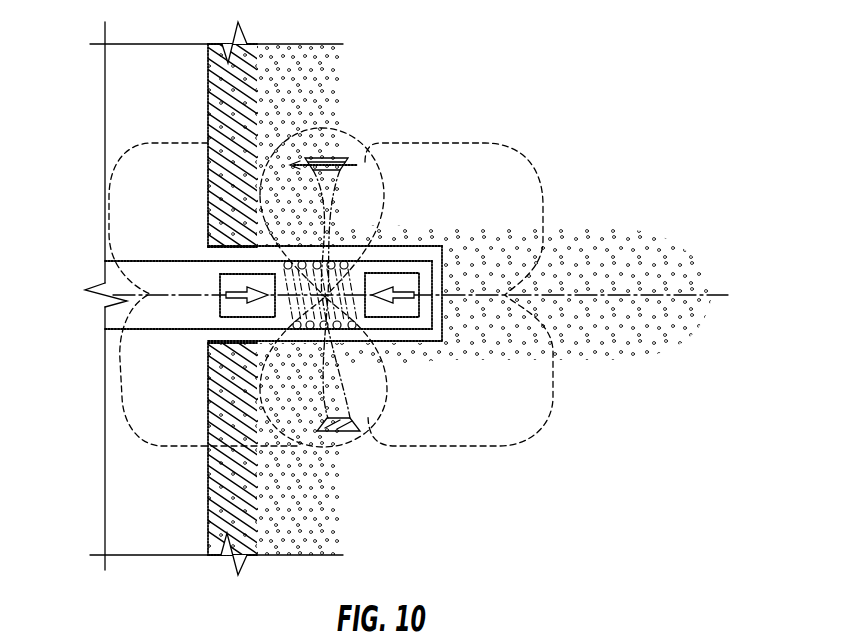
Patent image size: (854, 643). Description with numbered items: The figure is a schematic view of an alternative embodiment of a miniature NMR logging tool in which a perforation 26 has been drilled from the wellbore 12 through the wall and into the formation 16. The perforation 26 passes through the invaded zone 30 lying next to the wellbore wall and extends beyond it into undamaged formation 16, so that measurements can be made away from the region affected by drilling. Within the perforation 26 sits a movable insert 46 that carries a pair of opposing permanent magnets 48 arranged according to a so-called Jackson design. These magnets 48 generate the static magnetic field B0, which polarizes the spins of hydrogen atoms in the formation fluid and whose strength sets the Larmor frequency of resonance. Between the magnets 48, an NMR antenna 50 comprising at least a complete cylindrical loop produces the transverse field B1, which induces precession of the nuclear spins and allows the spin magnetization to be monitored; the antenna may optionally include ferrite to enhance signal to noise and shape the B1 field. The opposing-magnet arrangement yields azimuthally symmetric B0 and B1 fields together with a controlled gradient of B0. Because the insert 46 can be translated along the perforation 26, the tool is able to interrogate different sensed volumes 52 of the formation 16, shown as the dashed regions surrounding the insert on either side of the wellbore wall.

The wellbore 12 is at (173, 124).
The formation 16 is at (337, 470).
The perforation 26 is at (425, 250).
The invaded zone 30 is at (204, 475).
The movable insert 46 is at (165, 330).
The permanent magnet 48 is at (230, 296).
The NMR antenna 50 is at (350, 328).
The sensed volume 52 is at (338, 159).
The static magnetic field B0 is at (382, 293).
The transverse field B1 is at (323, 159).